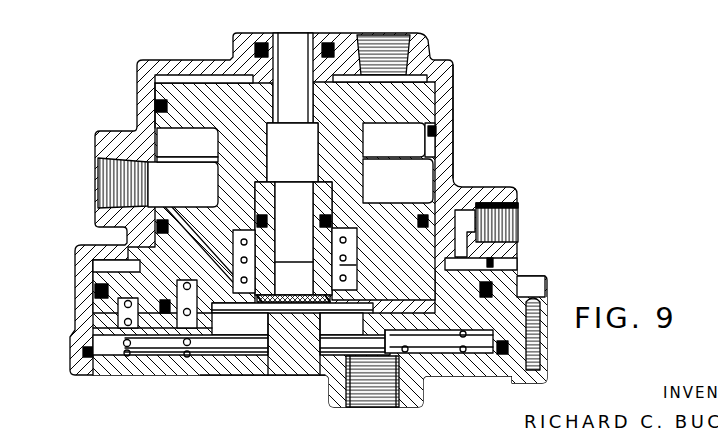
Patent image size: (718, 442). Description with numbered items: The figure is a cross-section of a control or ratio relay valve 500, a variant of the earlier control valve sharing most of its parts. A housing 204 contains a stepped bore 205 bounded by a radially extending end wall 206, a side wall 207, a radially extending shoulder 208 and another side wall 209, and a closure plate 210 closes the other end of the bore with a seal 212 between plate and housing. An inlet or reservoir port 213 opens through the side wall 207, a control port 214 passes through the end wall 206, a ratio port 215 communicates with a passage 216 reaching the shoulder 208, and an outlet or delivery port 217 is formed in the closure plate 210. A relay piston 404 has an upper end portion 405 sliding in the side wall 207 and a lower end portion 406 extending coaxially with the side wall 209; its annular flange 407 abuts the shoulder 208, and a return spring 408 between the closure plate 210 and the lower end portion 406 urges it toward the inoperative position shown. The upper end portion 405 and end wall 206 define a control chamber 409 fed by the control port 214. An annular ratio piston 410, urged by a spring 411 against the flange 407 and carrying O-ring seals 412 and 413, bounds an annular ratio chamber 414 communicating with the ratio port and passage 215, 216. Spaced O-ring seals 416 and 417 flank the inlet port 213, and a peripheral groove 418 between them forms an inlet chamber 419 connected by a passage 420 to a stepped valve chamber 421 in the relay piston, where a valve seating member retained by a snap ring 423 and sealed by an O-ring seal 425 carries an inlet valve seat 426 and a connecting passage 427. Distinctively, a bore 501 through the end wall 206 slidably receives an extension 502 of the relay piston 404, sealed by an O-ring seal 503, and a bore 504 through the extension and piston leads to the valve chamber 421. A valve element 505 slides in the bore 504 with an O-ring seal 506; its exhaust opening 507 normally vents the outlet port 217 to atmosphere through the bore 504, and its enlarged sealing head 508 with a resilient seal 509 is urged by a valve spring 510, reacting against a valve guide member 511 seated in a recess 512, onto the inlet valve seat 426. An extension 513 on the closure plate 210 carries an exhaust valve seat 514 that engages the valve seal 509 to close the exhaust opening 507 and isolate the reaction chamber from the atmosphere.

The housing 204 is at (455, 77).
The stepped bore 205 is at (437, 132).
The radially extending end wall 206 is at (172, 80).
The side wall 207 is at (435, 145).
The radially extending shoulder 208 is at (490, 263).
The side wall 209 is at (96, 340).
The closure plate 210 is at (236, 360).
The seal 212 is at (500, 356).
The inlet or reservoir port 213 is at (100, 165).
The control port 214 is at (420, 47).
The control or ratio port 215 is at (514, 210).
The passage 216 is at (463, 210).
The outlet or delivery port 217 is at (395, 407).
The relay piston 404 is at (385, 113).
The upper end portion 405 is at (156, 89).
The lower end portion 406 is at (470, 340).
The annular flange 407 is at (539, 323).
The return spring 408 is at (188, 357).
The control or application chamber 409 is at (200, 79).
The annular ratio piston 410 is at (95, 313).
The spring 411 is at (126, 357).
The O-ring seal 412 is at (95, 291).
The O-ring seal 413 is at (160, 298).
The annular ratio chamber 414 is at (93, 266).
The O-ring seal 416 is at (157, 225).
The O-ring seal 417 is at (155, 106).
The peripheral groove 418 is at (197, 154).
The inlet chamber 419 is at (410, 188).
The passage 420 is at (213, 206).
The stepped bore or valve chamber 421 is at (357, 235).
The snap ring 423 is at (400, 338).
The O-ring seal 425 is at (205, 288).
The valve seat 426 is at (340, 312).
The connecting passage 427 is at (262, 312).
The control or ratio relay valve 500 is at (578, 102).
The bore 501 is at (262, 43).
The extension 502 is at (302, 33).
The O-ring seal 503 is at (328, 43).
The bore 504 is at (273, 103).
The valve element 505 is at (310, 237).
The O-ring seal 506 is at (322, 208).
The exhaust opening 507 is at (300, 180).
The enlarged sealing head 508 is at (258, 247).
The annular resilient seal or disc 509 is at (330, 267).
The valve spring 510 is at (345, 265).
The valve guide member 511 is at (258, 215).
The recess 512 is at (332, 221).
The extension 513 is at (300, 340).
The exhaust valve seat 514 is at (298, 306).